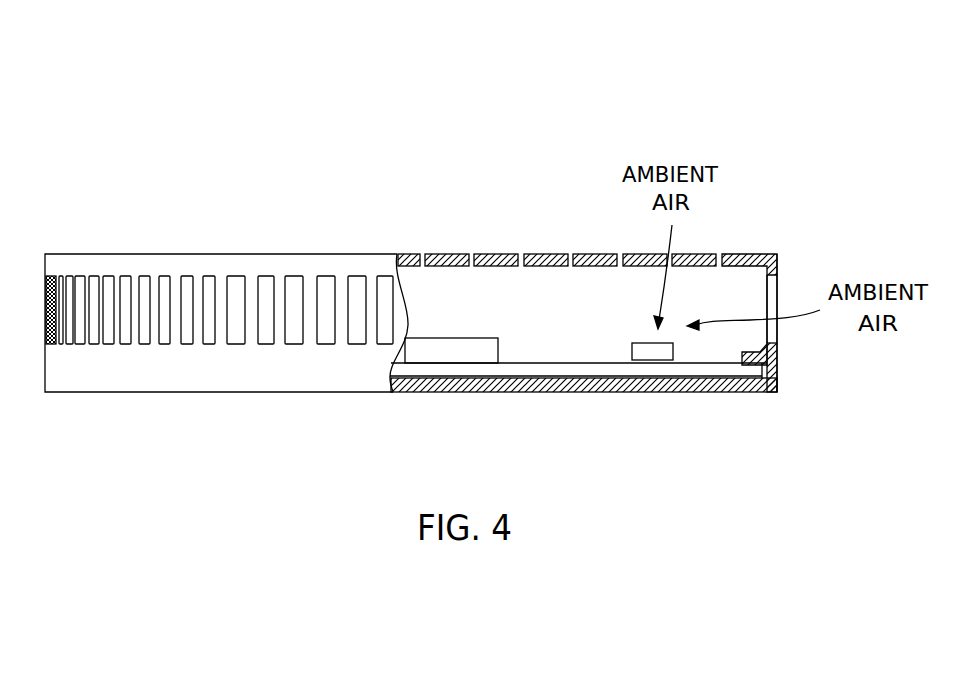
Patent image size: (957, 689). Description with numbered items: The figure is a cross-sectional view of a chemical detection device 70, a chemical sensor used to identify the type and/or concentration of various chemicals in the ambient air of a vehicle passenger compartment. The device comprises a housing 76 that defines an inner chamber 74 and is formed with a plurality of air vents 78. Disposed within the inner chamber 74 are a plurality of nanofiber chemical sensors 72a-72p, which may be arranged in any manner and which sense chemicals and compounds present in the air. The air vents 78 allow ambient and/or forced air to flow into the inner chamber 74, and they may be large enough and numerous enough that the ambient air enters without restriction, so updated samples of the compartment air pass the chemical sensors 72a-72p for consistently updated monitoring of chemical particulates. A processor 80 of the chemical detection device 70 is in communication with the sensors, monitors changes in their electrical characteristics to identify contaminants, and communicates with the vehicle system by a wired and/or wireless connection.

The chemical detection device 70 is at (247, 103).
The nanofiber chemical sensors 72a-72p is at (630, 350).
The inner chamber 74 is at (453, 313).
The housing 76 is at (773, 292).
The air vents 78 is at (262, 283).
The processor 80 is at (475, 344).